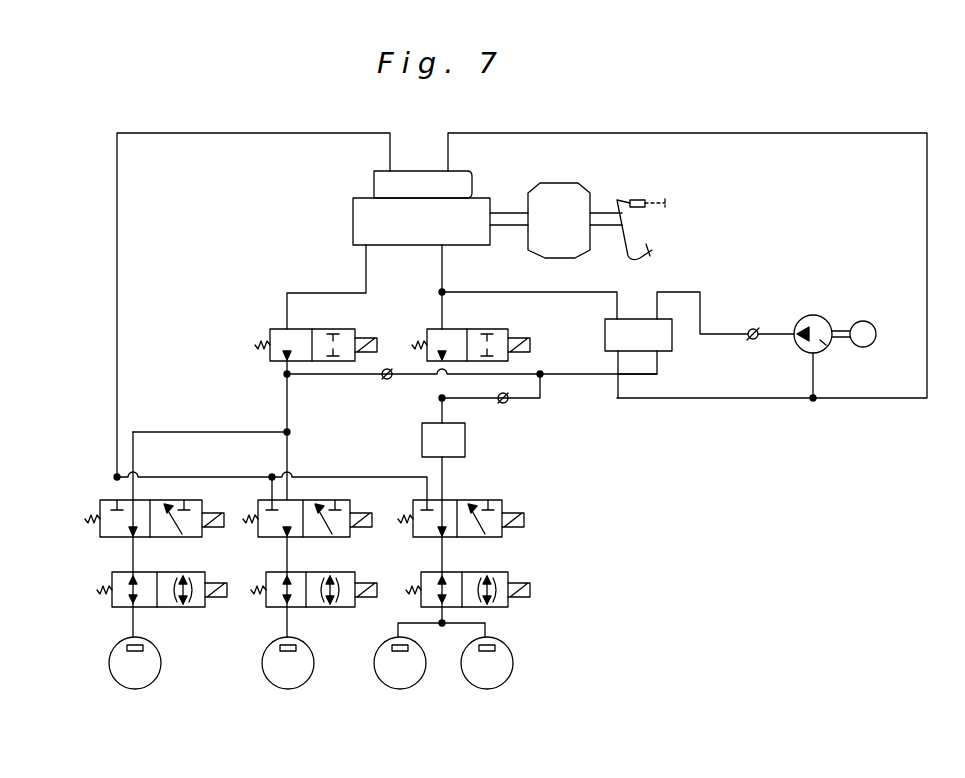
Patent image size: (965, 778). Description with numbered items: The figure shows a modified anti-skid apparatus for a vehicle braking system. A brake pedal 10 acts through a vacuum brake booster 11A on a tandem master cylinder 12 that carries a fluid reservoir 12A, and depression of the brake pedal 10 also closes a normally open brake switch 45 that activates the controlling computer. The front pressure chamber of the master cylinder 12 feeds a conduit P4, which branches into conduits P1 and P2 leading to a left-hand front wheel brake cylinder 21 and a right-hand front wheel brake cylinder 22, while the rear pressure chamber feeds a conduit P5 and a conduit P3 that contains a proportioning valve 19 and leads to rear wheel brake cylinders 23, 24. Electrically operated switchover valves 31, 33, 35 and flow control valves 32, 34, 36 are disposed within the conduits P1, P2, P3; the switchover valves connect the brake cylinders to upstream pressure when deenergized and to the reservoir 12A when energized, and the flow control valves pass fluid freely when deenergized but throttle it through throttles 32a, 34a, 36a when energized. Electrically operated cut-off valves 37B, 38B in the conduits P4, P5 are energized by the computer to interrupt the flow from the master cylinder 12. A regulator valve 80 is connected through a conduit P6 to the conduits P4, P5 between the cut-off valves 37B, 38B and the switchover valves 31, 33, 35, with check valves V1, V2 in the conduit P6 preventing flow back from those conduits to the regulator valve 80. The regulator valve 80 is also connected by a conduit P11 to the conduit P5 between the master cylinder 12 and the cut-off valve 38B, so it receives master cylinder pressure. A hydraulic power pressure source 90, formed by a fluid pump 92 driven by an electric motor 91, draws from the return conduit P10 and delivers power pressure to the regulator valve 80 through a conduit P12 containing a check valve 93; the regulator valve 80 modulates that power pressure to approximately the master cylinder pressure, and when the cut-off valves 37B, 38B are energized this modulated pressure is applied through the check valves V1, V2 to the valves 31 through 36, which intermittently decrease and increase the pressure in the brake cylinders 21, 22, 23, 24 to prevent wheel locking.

The brake pedal 10 is at (648, 248).
The vacuum brake booster 11A is at (562, 197).
The tandem master cylinder 12 is at (353, 218).
The fluid reservoir 12A is at (374, 184).
The proportioning valve 19 is at (465, 439).
The left-hand front wheel brake cylinder 21 is at (136, 651).
The right-hand front wheel brake cylinder 22 is at (289, 651).
The rear wheel brake cylinder 23 is at (401, 651).
The rear wheel brake cylinder 24 is at (488, 651).
The switchover valve 31 is at (100, 535).
The flow control valve 32 is at (138, 591).
The throttle 32a is at (190, 592).
The switchover valve 33 is at (268, 536).
The flow control valve 34 is at (306, 590).
The throttle 34a is at (336, 592).
The switchover valve 35 is at (505, 503).
The flow control valve 36 is at (483, 588).
The throttle 36a is at (497, 592).
The cut-off valve 37B is at (360, 333).
The cut-off valve 38B is at (520, 338).
The brake switch 45 is at (637, 200).
The regulator valve 80 is at (636, 326).
The hydraulic power pressure source 90 is at (814, 310).
The electric motor 91 is at (866, 324).
The fluid pump 92 is at (818, 346).
The check valve 93 is at (758, 328).
The conduit P1 is at (188, 432).
The conduit P2 is at (288, 445).
The conduit P3 is at (443, 476).
The conduit P4 is at (287, 301).
The conduit P5 is at (443, 272).
The conduit P6 is at (590, 377).
The return conduit P10 is at (732, 398).
The conduit P11 is at (528, 293).
The conduit P12 is at (683, 292).
The check valve V1 is at (387, 380).
The check valve V2 is at (507, 403).